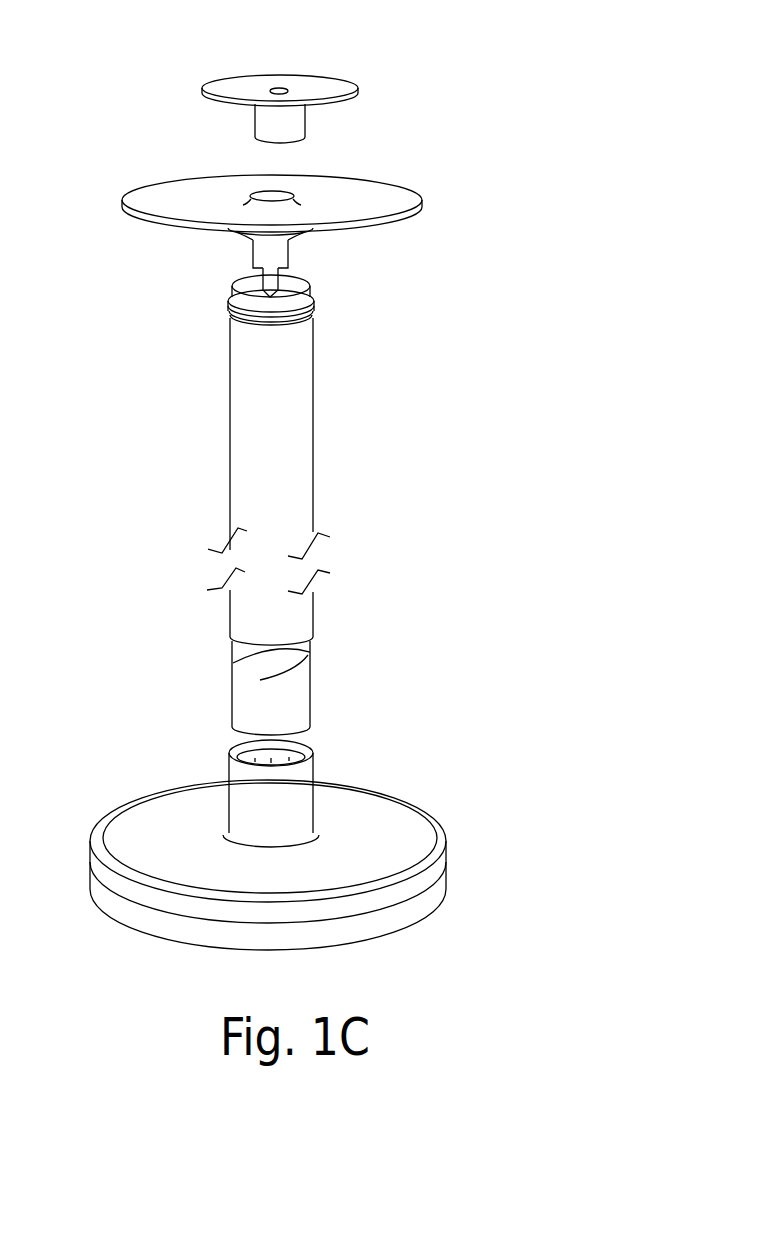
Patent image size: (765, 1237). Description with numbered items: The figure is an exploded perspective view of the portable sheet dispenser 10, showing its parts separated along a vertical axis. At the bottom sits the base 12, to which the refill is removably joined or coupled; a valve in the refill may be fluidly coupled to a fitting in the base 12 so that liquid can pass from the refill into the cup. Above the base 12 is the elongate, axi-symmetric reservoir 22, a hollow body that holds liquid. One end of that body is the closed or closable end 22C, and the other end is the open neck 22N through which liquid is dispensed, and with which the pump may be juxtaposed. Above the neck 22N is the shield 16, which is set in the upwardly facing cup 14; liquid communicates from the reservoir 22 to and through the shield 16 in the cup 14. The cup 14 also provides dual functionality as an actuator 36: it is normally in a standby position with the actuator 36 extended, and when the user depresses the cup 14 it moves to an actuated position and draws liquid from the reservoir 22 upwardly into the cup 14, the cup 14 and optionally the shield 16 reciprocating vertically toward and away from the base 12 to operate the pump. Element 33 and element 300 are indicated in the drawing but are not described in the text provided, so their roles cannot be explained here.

The dispenser 10 is at (468, 727).
The base 12 is at (438, 860).
The cup 14 is at (234, 88).
The shield 16 is at (181, 190).
The reservoir 22 is at (253, 427).
The neck 22N is at (232, 312).
The closed end 22C is at (259, 711).
The connector tip 33 is at (268, 293).
The actuator 36 is at (393, 92).
The column wall 300 is at (230, 466).